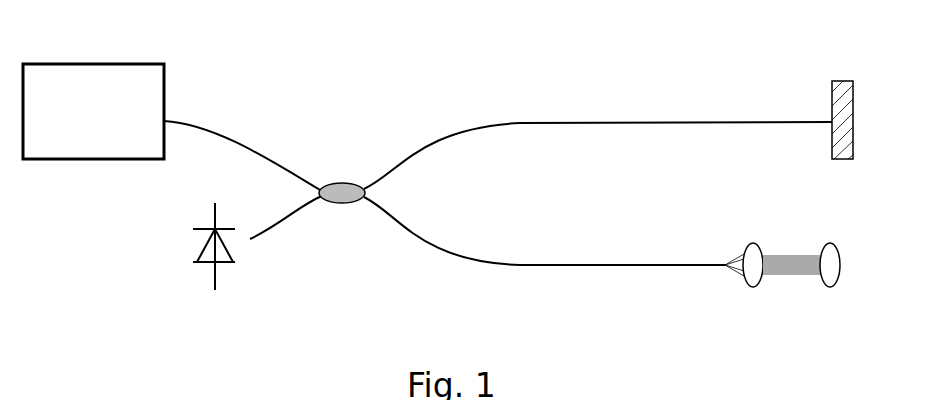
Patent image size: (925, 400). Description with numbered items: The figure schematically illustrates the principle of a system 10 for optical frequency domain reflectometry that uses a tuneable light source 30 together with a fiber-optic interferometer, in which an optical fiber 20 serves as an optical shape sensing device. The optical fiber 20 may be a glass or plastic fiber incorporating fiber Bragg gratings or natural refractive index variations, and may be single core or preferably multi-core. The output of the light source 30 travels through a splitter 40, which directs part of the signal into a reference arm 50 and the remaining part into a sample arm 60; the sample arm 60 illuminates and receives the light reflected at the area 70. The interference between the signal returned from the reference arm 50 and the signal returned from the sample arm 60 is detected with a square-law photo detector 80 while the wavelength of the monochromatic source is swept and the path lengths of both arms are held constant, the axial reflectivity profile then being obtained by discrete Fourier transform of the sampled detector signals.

The system 10 is at (316, 118).
The optical fiber 20 is at (640, 116).
The tuneable light source 30 is at (115, 124).
The splitter 40 is at (325, 213).
The reference arm 50 is at (852, 76).
The sample arm 60 is at (632, 242).
The area 70 is at (810, 244).
The square-law photo detector 80 is at (202, 222).